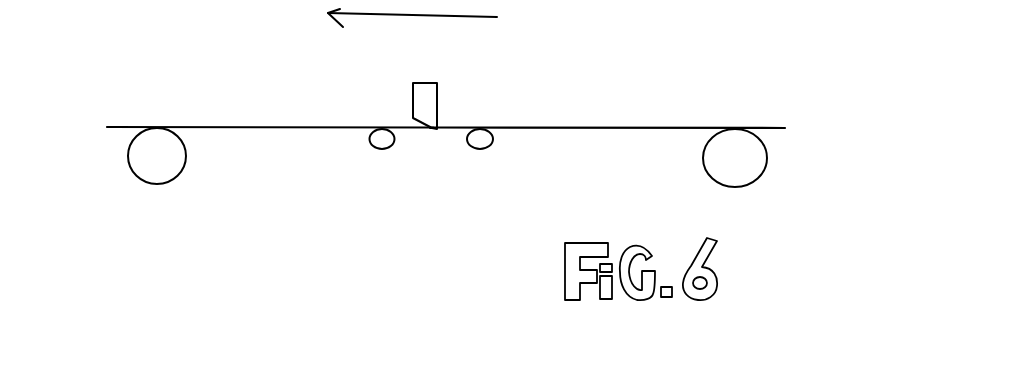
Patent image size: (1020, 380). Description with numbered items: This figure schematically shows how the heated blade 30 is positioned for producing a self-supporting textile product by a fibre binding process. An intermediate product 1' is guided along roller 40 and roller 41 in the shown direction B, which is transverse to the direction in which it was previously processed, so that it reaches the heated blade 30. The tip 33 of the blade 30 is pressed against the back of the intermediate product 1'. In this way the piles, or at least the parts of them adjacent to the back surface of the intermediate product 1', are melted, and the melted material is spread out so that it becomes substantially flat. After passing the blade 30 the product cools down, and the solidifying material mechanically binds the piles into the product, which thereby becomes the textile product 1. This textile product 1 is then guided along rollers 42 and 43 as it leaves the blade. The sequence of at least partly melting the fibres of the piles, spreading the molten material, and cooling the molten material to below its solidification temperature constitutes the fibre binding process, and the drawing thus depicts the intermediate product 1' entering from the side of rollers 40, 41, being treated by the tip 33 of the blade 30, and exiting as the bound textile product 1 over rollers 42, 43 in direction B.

The textile product 1 is at (270, 87).
The intermediate product 1' is at (609, 94).
The blade 30 is at (438, 91).
The tip 33 is at (433, 135).
The roller 40 is at (703, 165).
The roller 41 is at (485, 152).
The roller 42 is at (377, 152).
The roller 43 is at (180, 175).
The direction B is at (426, 19).